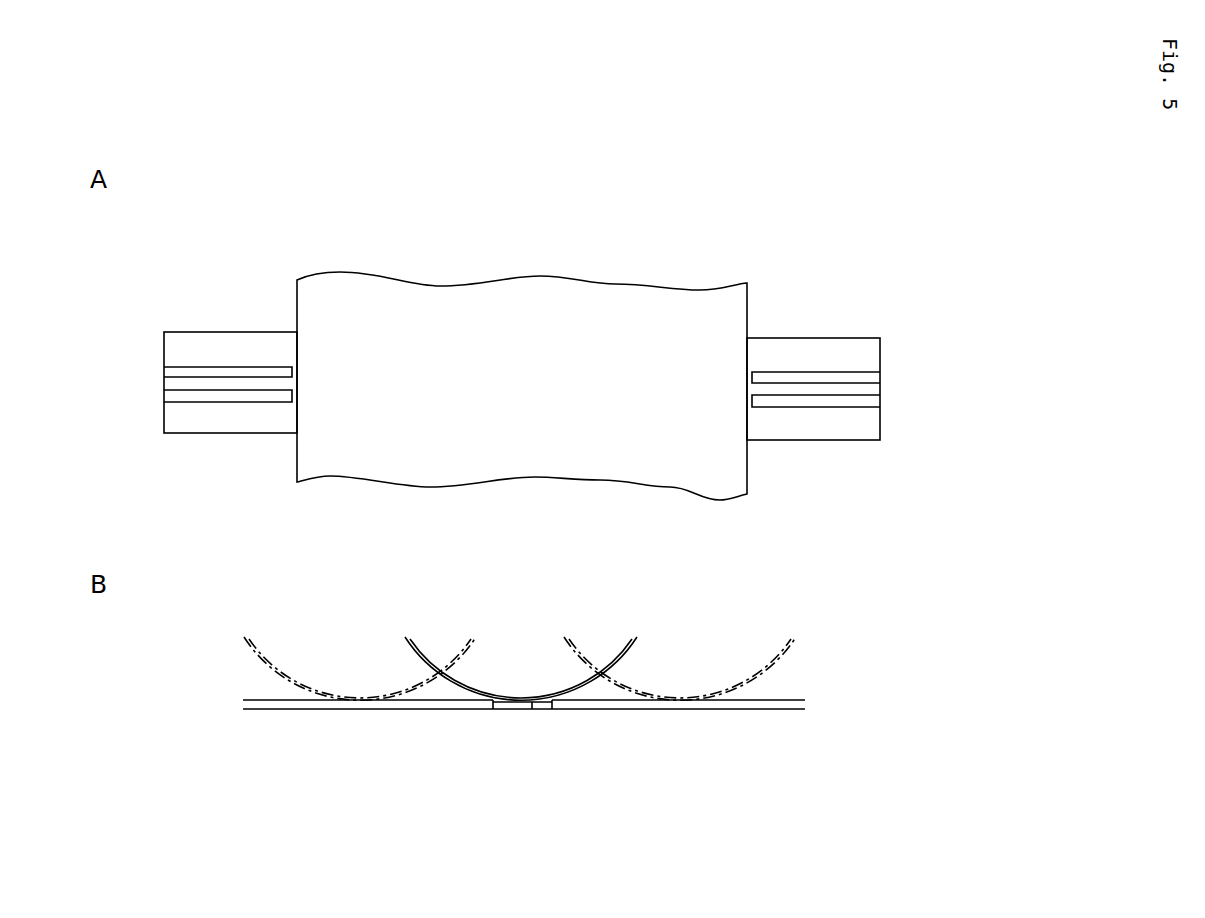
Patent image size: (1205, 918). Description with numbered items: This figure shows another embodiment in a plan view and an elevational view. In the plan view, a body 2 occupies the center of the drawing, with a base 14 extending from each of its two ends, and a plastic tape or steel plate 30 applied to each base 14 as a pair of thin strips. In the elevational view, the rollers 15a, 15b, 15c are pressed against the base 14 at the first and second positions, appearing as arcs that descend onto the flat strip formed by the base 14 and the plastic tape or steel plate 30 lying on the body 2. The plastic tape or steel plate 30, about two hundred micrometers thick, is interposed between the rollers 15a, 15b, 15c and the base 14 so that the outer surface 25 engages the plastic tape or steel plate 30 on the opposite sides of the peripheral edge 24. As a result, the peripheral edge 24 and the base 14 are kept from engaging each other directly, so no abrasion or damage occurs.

The rubber strip / blanket 2 is at (336, 316).
The base 14 is at (202, 345).
The plastic tape or steel plate 30 is at (186, 368).
The peripheral edge 24 is at (508, 710).
The outer surface 25 is at (530, 710).
The roller 15a is at (558, 675).
The roller 15b is at (360, 668).
The roller 15c is at (680, 668).